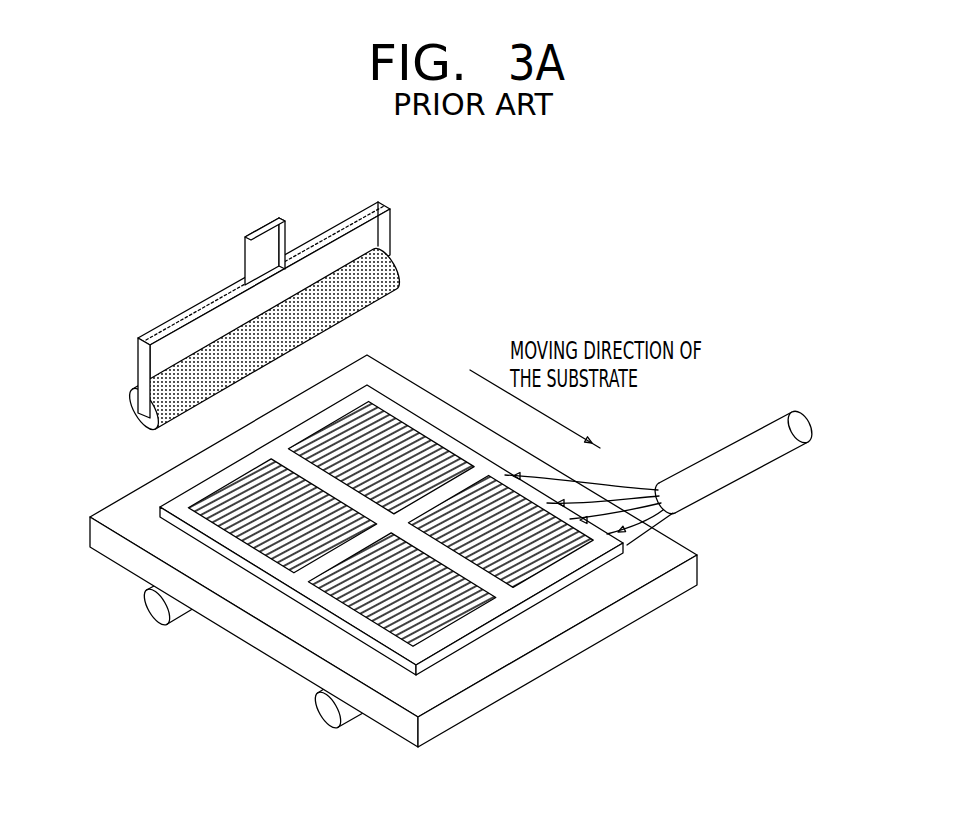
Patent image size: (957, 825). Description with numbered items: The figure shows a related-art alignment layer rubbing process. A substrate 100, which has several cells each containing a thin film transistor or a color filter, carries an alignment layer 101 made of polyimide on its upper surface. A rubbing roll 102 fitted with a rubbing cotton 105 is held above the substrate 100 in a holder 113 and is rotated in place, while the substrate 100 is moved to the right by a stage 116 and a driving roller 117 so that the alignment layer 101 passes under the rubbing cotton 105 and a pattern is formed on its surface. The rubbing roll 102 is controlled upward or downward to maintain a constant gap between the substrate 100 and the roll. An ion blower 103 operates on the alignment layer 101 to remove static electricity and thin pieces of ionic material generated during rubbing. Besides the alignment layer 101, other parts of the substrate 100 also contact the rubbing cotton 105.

The substrate 100 is at (509, 596).
The alignment layer 101 is at (447, 623).
The rubbing roll 102 is at (131, 397).
The ion blower 103 is at (757, 460).
The rubbing cotton 105 is at (207, 350).
The roller holder bar 113 is at (213, 300).
The stage 116 is at (123, 565).
The driving roller 117 is at (320, 705).